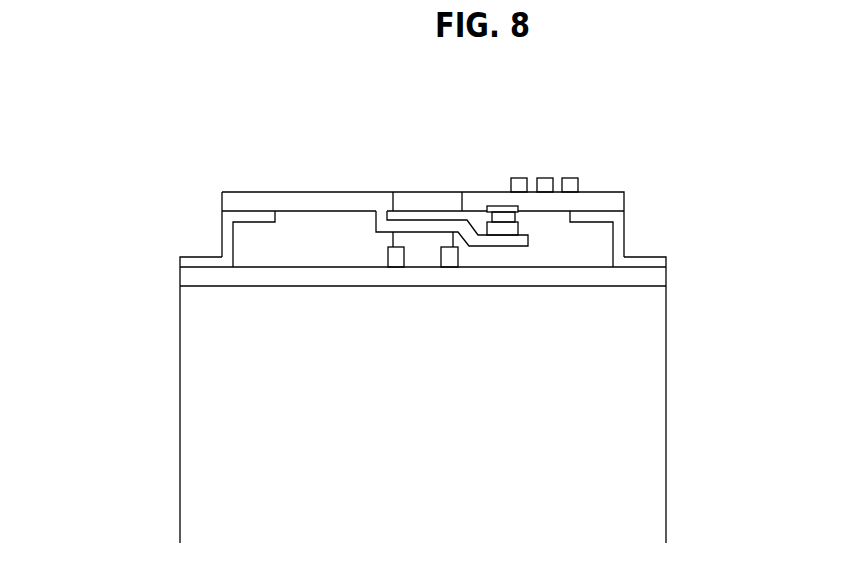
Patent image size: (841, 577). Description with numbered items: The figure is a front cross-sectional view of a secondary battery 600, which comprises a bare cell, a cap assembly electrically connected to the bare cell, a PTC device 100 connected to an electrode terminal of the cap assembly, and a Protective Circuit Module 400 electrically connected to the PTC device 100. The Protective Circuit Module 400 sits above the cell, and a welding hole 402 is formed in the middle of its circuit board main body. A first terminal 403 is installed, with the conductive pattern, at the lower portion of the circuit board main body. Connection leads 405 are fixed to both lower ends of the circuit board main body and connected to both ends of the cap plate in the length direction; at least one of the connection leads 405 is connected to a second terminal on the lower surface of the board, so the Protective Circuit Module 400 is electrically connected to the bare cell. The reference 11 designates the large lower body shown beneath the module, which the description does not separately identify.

The secondary battery 600 is at (102, 91).
The can 11 is at (185, 373).
The Protective Circuit Module 400 is at (224, 172).
The welding hole 402 is at (405, 200).
The PTC device 100 is at (450, 225).
The first terminal 403 is at (502, 203).
The connection leads 405 is at (222, 224).